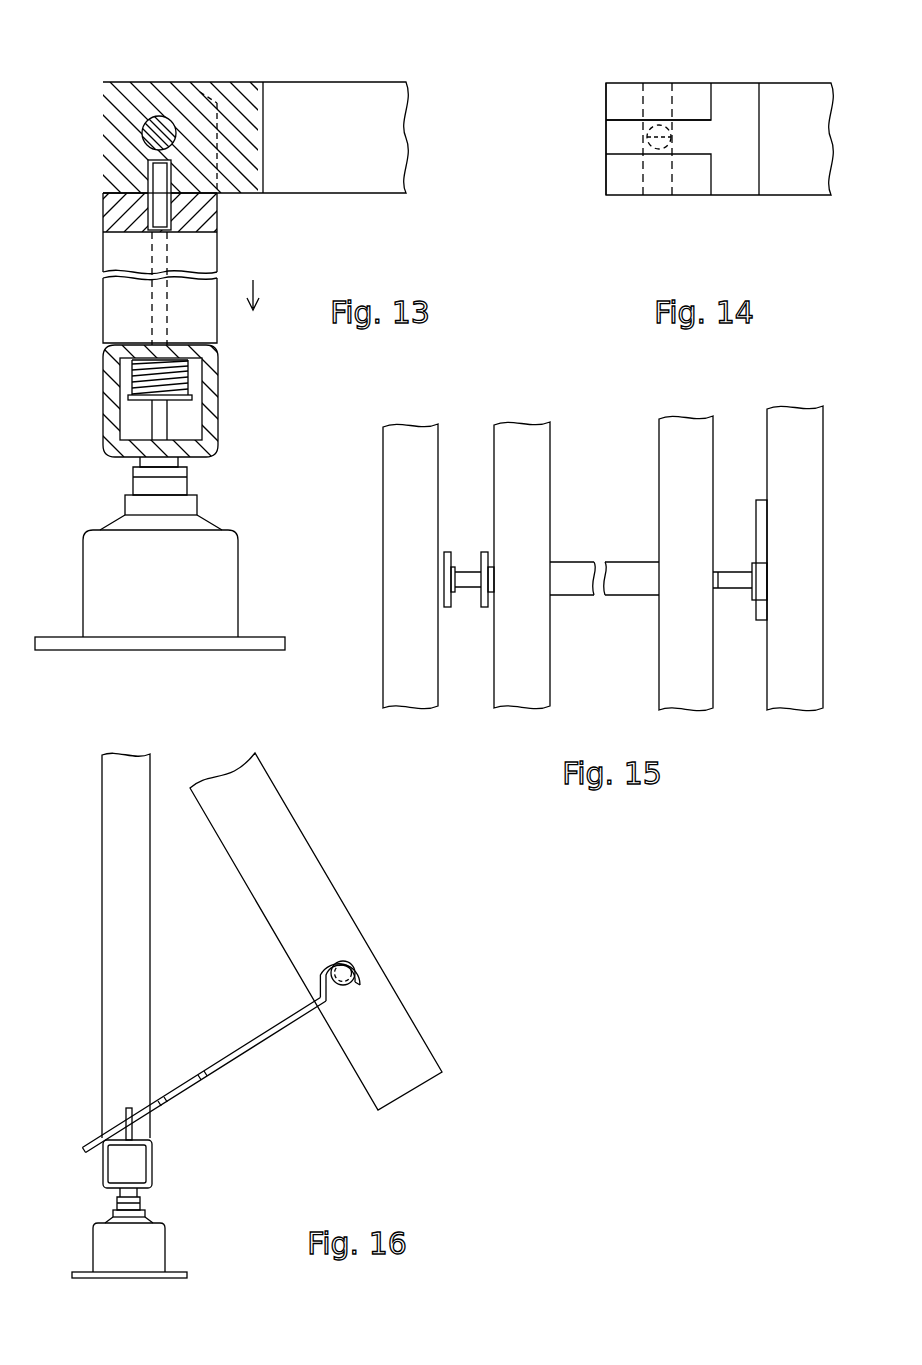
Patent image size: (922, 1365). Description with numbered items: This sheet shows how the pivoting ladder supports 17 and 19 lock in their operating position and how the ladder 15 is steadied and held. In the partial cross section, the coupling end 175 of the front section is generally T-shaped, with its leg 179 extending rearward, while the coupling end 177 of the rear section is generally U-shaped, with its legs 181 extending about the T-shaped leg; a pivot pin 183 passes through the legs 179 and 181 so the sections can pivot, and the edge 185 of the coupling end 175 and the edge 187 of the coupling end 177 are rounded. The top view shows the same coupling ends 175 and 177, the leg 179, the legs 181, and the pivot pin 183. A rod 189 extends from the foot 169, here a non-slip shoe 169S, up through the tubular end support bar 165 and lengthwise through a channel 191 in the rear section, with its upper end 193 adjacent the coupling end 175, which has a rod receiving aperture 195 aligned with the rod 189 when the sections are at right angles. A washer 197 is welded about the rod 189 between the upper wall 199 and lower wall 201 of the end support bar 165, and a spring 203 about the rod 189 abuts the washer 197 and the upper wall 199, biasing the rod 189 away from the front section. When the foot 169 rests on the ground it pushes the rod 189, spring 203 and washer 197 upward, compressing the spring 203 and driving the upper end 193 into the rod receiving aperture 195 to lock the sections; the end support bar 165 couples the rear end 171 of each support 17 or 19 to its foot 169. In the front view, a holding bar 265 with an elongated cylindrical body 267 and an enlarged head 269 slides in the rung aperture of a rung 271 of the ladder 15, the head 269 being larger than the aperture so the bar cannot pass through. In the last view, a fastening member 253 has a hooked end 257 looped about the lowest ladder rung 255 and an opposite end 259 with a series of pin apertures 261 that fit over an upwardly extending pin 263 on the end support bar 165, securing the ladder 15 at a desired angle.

In FIG. 15, the ladder 15 is at (659, 697).
In FIG. 16, the ladder 15 is at (278, 827).
In FIG. 15, the ladder support 17 is at (808, 697).
In FIG. 15, the ladder support 19 is at (400, 693).
In FIG. 16, the ladder support 19 is at (112, 940).
In FIG. 13, the end support bar 165 is at (214, 418).
In FIG. 16, the end support bar 165 is at (152, 1168).
In FIG. 13, the foot 169 is at (78, 571).
In FIG. 13, the non-slip shoe 169S is at (210, 588).
In FIG. 13, the rear end 171 is at (200, 357).
In FIG. 13, the coupling end 175 is at (256, 87).
In FIG. 14, the coupling end 175 is at (747, 110).
In FIG. 13, the coupling end 177 is at (123, 250).
In FIG. 14, the coupling end 177 is at (622, 188).
In FIG. 14, the leg 179 is at (697, 133).
In FIG. 14, the legs 181 is at (615, 172).
In FIG. 13, the pivot pin 183 is at (150, 120).
In FIG. 14, the pivot pin 183 is at (693, 180).
In FIG. 13, the edge 185 is at (148, 192).
In FIG. 13, the edge 187 is at (198, 93).
In FIG. 13, the rod 189 is at (171, 233).
In FIG. 14, the rod 189 is at (660, 125).
In FIG. 13, the channel 191 is at (172, 224).
In FIG. 13, the upper end 193 is at (155, 168).
In FIG. 13, the rod receiving aperture 195 is at (171, 176).
In FIG. 14, the rod receiving aperture 195 is at (675, 145).
In FIG. 13, the washer 197 is at (132, 398).
In FIG. 13, the upper wall 199 is at (128, 352).
In FIG. 13, the lower wall 201 is at (130, 457).
In FIG. 13, the spring 203 is at (136, 376).
In FIG. 16, the fastening member 253 is at (300, 1028).
In FIG. 16, the ladder rung 255 is at (355, 960).
In FIG. 16, the hooked end 257 is at (320, 988).
In FIG. 16, the opposite end 259 is at (88, 1140).
In FIG. 16, the pin apertures 261 is at (165, 1103).
In FIG. 16, the pin 263 is at (125, 1132).
In FIG. 15, the holding bar 265 is at (733, 572).
In FIG. 15, the cylindrical body 267 is at (733, 590).
In FIG. 15, the enlarged head 269 is at (485, 550).
In FIG. 15, the rung 271 is at (617, 561).